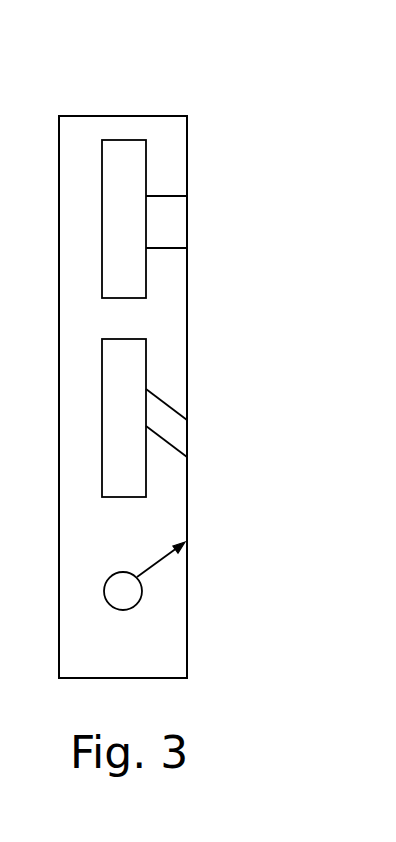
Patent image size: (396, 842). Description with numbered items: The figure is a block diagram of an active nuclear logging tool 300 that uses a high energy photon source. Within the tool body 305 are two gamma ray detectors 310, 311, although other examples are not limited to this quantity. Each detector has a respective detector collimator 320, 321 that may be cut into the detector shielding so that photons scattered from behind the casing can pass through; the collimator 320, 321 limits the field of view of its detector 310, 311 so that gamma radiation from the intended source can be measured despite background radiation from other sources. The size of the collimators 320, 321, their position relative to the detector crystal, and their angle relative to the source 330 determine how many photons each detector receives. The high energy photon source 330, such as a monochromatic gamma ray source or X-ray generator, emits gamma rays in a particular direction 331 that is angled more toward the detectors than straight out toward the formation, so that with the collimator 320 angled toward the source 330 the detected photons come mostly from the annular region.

The active nuclear logging tool 300 is at (212, 87).
The tool body 305 is at (187, 298).
The gamma ray detector 310 is at (146, 153).
The detector collimator 320 is at (168, 223).
The gamma ray detector 311 is at (146, 367).
The detector collimator 321 is at (168, 433).
The high energy photon source 330 is at (135, 606).
The gamma ray direction 331 is at (157, 565).